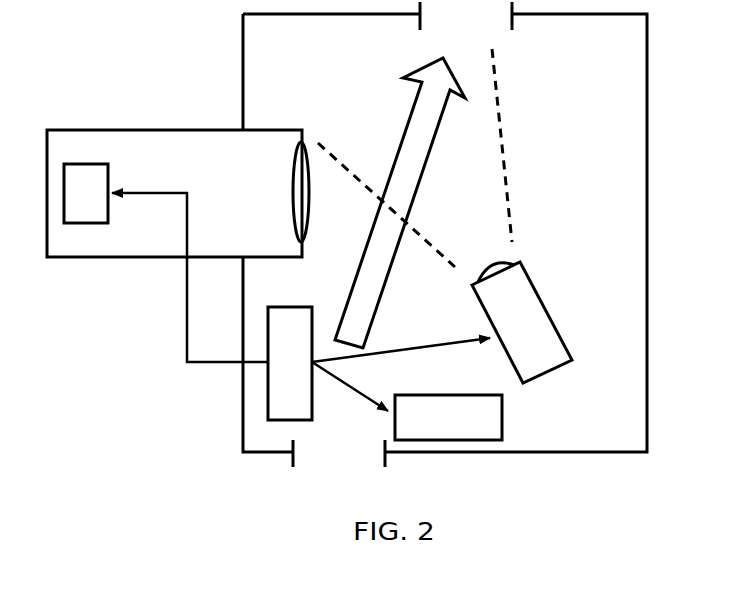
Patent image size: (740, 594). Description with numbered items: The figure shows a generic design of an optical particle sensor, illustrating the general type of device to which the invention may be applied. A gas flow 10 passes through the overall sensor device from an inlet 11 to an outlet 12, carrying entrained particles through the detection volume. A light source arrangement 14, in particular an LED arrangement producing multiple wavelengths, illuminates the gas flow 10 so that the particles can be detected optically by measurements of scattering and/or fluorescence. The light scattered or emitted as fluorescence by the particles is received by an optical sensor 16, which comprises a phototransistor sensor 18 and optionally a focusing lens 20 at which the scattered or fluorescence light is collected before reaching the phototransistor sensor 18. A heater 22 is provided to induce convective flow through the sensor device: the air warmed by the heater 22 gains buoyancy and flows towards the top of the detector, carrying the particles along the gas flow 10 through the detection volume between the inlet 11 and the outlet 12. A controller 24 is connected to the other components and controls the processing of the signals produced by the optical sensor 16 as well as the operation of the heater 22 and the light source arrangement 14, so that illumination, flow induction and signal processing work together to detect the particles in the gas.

The gas flow 10 is at (378, 134).
The inlet 11 is at (346, 467).
The outlet 12 is at (462, 26).
The light source arrangement 14 is at (542, 300).
The optical sensor 16 is at (90, 128).
The phototransistor sensor 18 is at (90, 223).
The focusing lens 20 is at (293, 187).
The heater 22 is at (502, 413).
The controller 24 is at (312, 332).